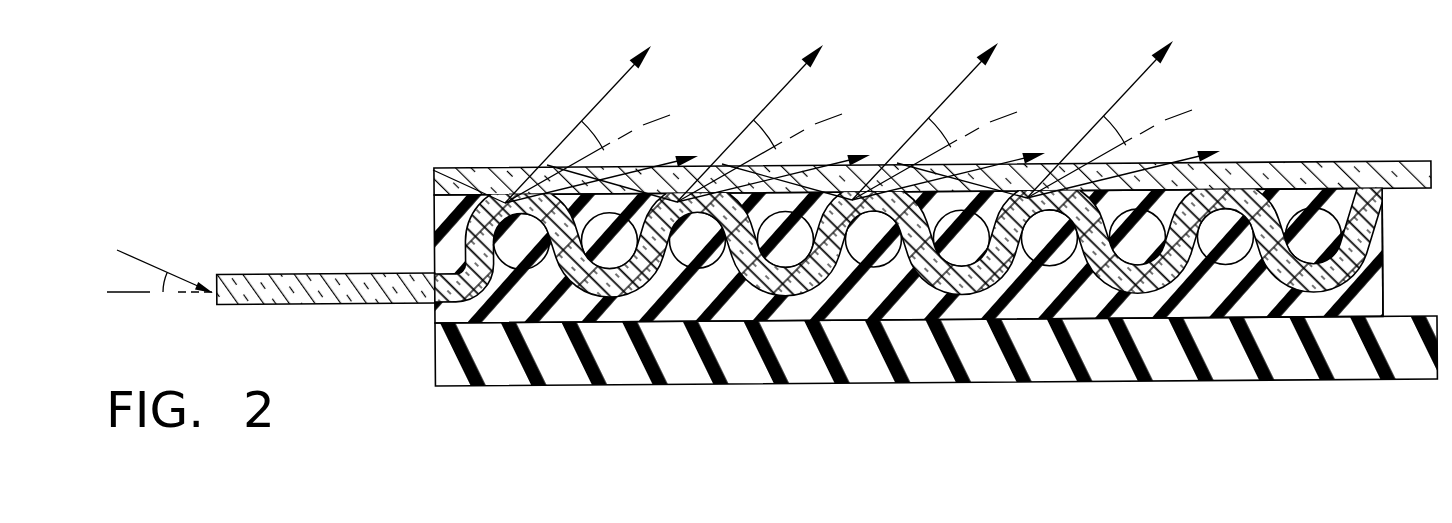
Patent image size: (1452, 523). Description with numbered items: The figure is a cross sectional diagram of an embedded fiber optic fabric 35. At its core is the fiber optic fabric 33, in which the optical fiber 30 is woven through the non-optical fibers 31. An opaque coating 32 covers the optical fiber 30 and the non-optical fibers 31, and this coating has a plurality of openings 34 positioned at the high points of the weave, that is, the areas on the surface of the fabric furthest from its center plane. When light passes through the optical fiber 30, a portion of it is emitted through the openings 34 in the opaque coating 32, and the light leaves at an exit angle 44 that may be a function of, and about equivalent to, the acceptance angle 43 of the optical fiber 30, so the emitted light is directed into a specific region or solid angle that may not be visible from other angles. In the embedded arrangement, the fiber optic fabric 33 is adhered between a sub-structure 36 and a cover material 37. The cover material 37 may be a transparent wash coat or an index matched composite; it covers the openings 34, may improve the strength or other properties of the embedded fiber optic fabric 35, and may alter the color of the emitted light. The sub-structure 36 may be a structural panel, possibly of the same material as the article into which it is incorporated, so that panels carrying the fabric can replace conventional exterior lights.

The optical fiber 30 is at (375, 294).
The non-optical fibers 31 is at (961, 266).
The opaque coating 32 is at (441, 210).
The fiber optic fabric 33 is at (1428, 278).
The openings 34 is at (511, 203).
The embedded fiber optic fabric 35 is at (829, 285).
The sub-structure 36 is at (860, 367).
The cover material 37 is at (1317, 165).
The acceptance angle 43 is at (162, 281).
The exit angle 44 is at (598, 131).